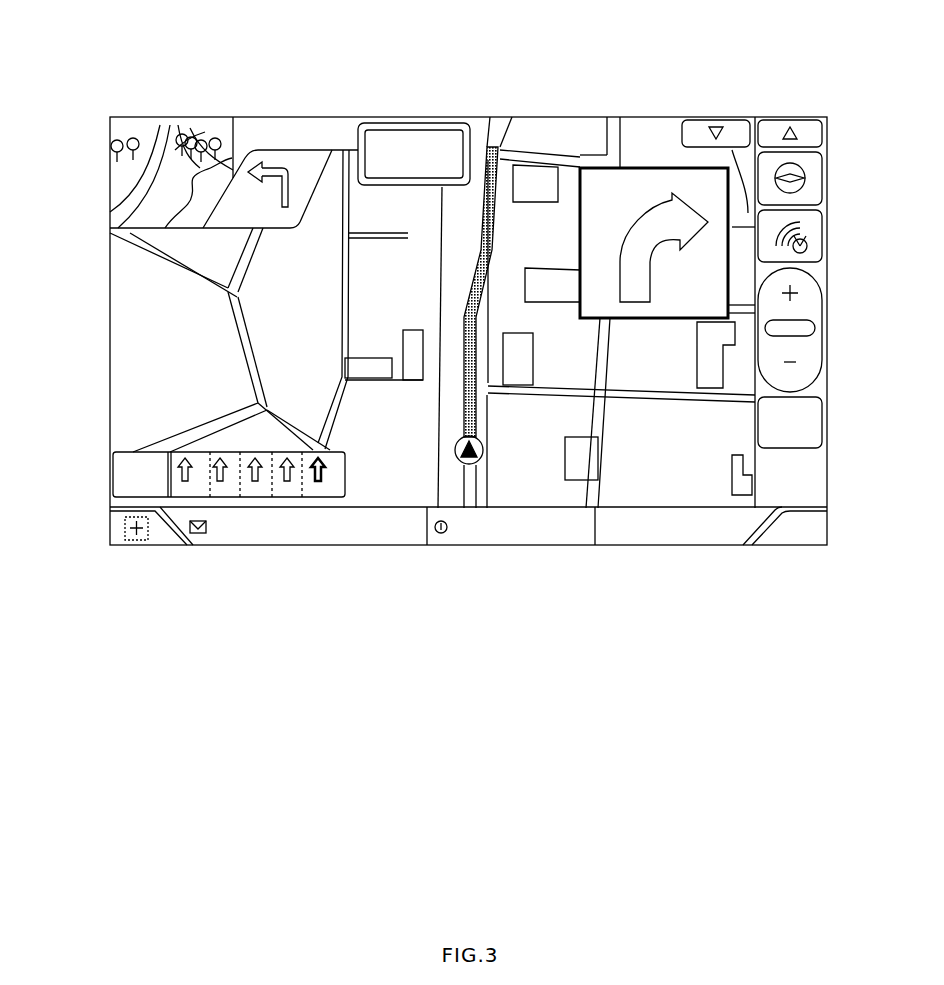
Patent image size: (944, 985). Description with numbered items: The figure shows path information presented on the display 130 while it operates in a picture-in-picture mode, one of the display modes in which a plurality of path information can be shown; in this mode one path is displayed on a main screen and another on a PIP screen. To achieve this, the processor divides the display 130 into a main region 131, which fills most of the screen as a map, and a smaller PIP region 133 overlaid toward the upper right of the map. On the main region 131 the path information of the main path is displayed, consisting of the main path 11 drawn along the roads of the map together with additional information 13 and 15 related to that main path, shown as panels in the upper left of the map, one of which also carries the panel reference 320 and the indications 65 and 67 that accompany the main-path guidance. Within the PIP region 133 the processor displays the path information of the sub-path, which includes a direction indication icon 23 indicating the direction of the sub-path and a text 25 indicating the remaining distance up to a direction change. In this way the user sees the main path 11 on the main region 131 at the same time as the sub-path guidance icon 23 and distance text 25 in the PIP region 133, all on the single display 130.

The display 130 is at (804, 86).
The main region 131 is at (121, 318).
The PIP region 133 is at (652, 166).
The main path 11 is at (492, 148).
The additional information 13 is at (205, 133).
The additional information 15 is at (293, 162).
The turn information panel 320 is at (280, 146).
The remaining distance indicator 65 is at (171, 176).
The lane guidance panel 67 is at (229, 447).
The direction indication icon 23 is at (624, 234).
The text 25 is at (691, 303).